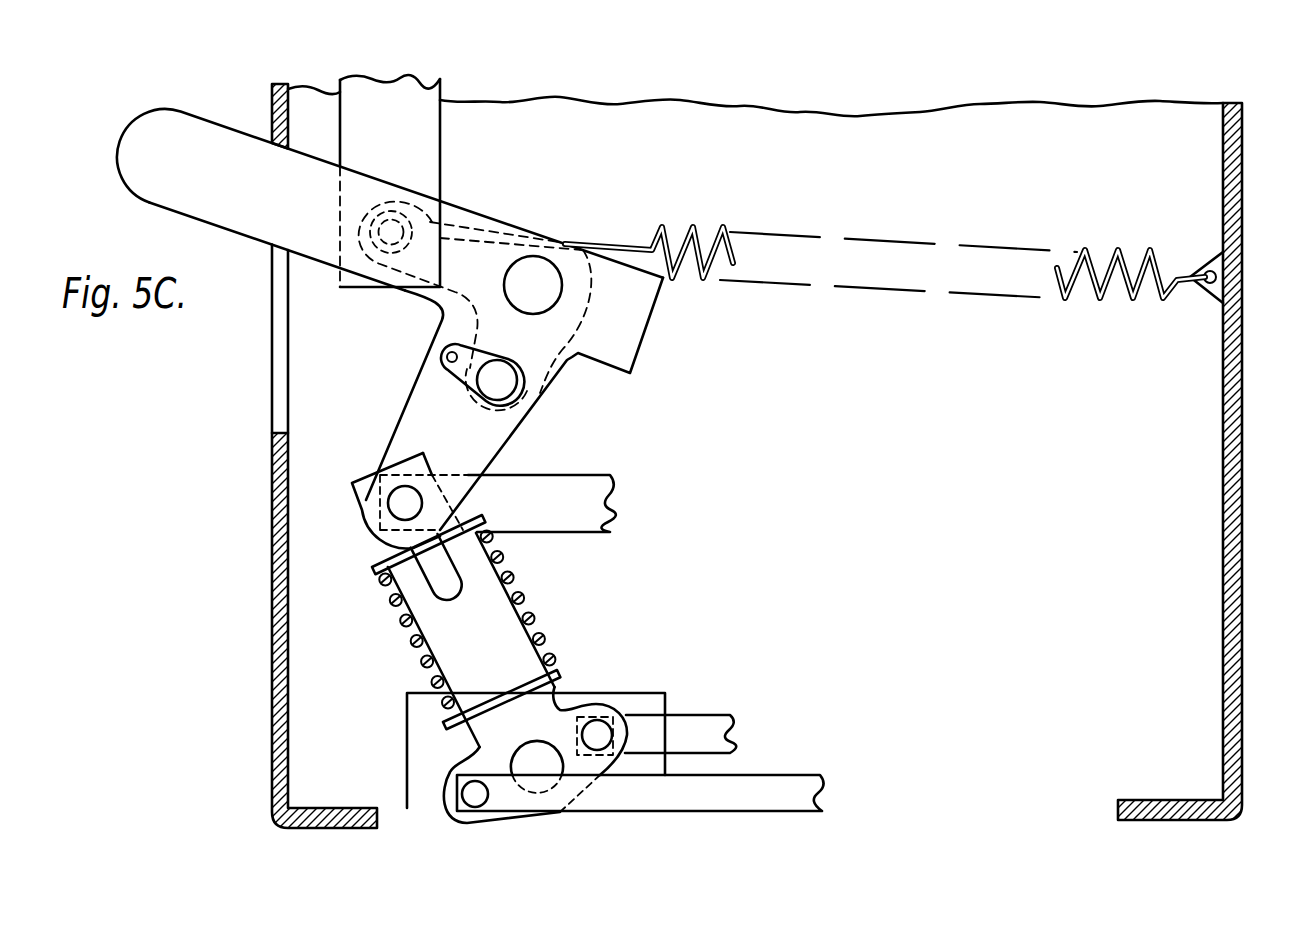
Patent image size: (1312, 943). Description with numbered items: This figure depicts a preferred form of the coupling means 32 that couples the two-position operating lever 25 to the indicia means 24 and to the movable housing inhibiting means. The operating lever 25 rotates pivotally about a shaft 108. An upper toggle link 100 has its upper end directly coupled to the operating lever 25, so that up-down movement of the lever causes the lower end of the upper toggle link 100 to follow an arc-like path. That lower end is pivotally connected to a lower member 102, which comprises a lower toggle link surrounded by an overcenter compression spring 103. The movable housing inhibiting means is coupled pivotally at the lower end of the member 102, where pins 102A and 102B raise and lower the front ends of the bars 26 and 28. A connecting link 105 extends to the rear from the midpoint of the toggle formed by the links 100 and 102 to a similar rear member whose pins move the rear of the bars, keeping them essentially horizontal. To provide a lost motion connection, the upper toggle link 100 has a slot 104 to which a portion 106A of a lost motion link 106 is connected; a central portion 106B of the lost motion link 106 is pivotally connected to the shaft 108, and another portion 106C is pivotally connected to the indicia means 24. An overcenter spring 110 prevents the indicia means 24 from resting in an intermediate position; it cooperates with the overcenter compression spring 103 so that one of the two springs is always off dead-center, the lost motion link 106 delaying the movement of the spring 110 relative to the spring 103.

The indicia means 24 is at (393, 87).
The operating lever 25 is at (254, 223).
The bar 26 is at (707, 718).
The bar 28 is at (767, 800).
The coupling means 32 is at (1304, 494).
The upper toggle link 100 is at (415, 422).
The lower member 102 is at (445, 628).
The pin 102A is at (476, 807).
The pin 102B is at (596, 728).
The overcenter compression spring 103 is at (500, 590).
The slot 104 is at (452, 347).
The connecting link 105 is at (582, 525).
The lost motion link 106 is at (560, 364).
The portion of lost motion link 106A is at (503, 389).
The central portion of lost motion link 106B is at (578, 293).
The portion of lost motion link 106C is at (497, 198).
The shaft 108 is at (545, 278).
The overcenter spring 110 is at (870, 247).